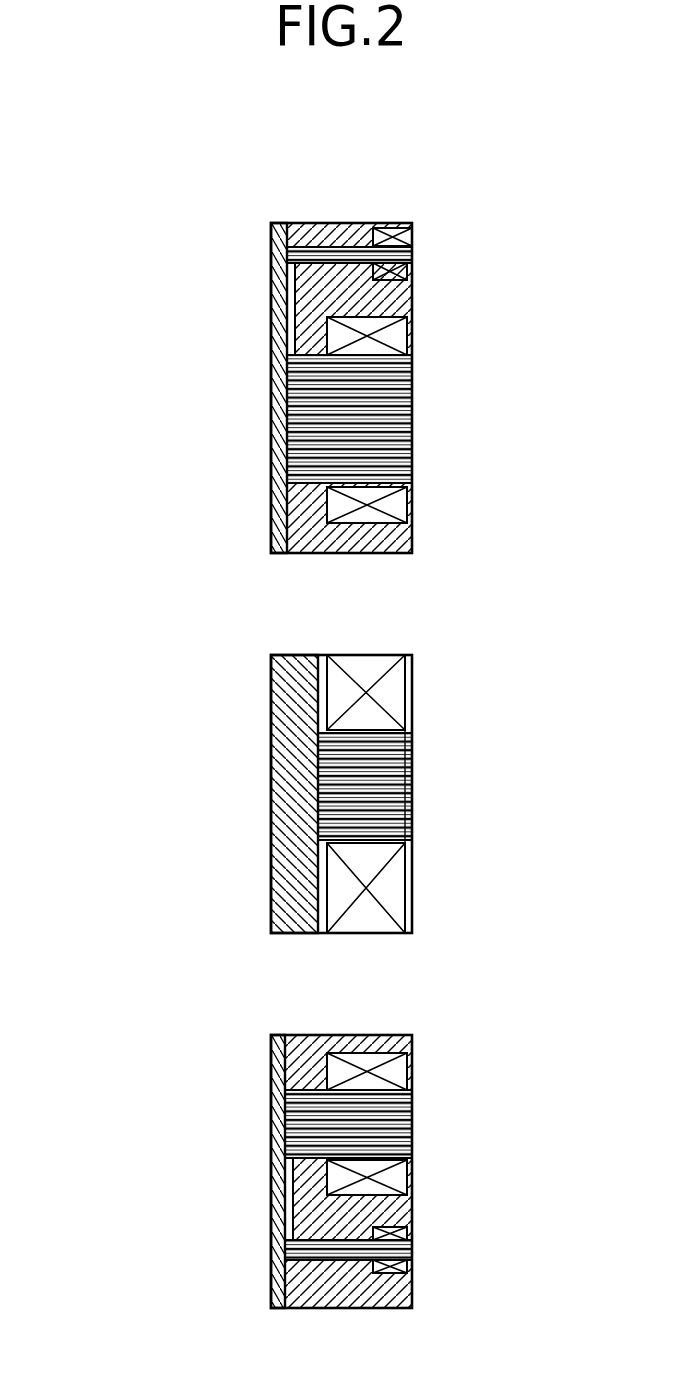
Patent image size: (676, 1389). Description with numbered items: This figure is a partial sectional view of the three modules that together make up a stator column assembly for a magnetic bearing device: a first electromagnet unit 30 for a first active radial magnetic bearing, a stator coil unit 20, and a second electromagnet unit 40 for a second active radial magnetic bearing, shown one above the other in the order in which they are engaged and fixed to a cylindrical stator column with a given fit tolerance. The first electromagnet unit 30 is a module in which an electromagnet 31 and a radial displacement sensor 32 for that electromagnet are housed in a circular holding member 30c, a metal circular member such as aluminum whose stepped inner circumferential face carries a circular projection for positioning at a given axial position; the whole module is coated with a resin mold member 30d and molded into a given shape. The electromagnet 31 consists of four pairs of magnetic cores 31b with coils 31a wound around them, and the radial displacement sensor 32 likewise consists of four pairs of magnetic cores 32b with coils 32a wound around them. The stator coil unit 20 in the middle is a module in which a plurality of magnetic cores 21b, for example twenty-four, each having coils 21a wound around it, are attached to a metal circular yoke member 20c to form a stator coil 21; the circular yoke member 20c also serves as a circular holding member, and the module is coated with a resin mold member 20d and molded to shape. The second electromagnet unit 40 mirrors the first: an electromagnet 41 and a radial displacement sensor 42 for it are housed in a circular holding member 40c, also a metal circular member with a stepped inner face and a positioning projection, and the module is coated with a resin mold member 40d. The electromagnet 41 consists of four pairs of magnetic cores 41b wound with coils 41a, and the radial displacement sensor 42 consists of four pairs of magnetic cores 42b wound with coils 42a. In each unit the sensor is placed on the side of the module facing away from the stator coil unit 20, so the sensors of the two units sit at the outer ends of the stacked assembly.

The stator coil unit 20 is at (314, 794).
The circular yoke member 20c is at (270, 728).
The resin mold member 20d is at (412, 880).
The stator coil 21 is at (440, 747).
The coils 21a is at (412, 690).
The magnetic cores 21b is at (412, 778).
The first electromagnet unit 30 is at (312, 379).
The circular holding member 30c is at (270, 328).
The resin mold member 30d is at (412, 541).
The electromagnet 31 is at (425, 400).
The coils 31a is at (412, 330).
The magnetic cores 31b is at (412, 393).
The radial displacement sensor 32 is at (422, 253).
The coils 32a is at (412, 238).
The magnetic cores 32b is at (412, 250).
The second electromagnet unit 40 is at (314, 1172).
The circular holding member 40c is at (270, 1135).
The resin mold member 40d is at (412, 1300).
The electromagnet 41 is at (421, 1096).
The coils 41a is at (412, 1078).
The magnetic cores 41b is at (412, 1128).
The radial displacement sensor 42 is at (424, 1233).
The coils 42a is at (412, 1232).
The magnetic cores 42b is at (412, 1243).